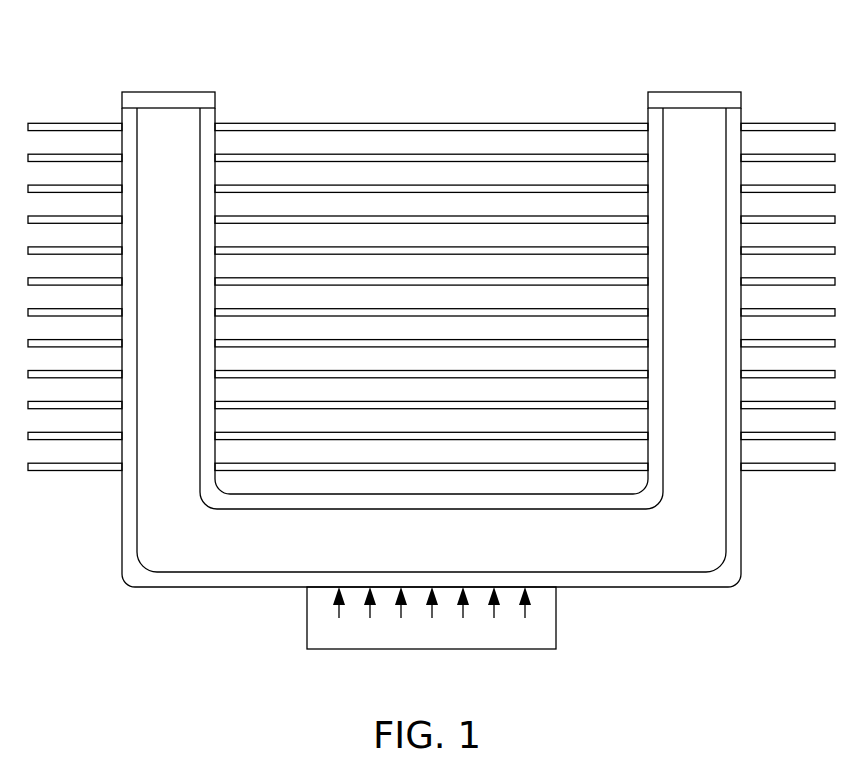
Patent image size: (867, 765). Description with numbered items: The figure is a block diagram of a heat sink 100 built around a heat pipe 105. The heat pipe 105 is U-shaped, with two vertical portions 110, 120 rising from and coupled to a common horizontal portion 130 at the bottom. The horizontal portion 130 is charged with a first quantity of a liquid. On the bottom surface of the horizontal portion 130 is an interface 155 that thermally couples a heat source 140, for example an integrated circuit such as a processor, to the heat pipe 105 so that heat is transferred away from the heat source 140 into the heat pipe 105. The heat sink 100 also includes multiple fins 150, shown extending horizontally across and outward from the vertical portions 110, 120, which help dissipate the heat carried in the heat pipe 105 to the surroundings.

The heat sink 100 is at (794, 69).
The heat pipe 105 is at (170, 92).
The vertical portion 110 is at (190, 293).
The vertical portion 120 is at (715, 291).
The horizontal portion 130 is at (452, 549).
The heat source 140 is at (370, 650).
The fins 150 is at (108, 471).
The interface 155 is at (477, 587).